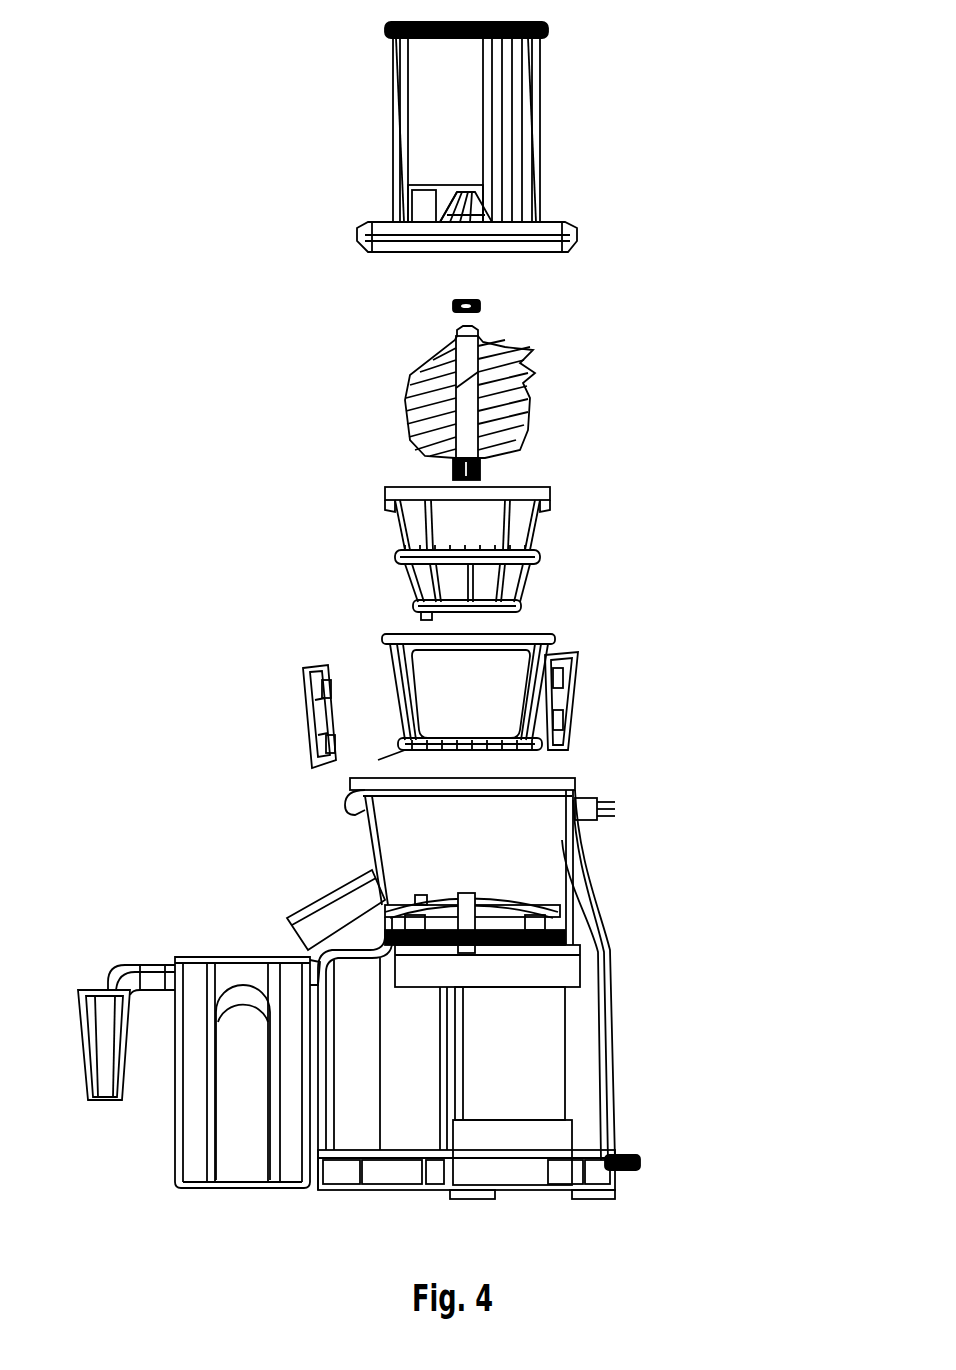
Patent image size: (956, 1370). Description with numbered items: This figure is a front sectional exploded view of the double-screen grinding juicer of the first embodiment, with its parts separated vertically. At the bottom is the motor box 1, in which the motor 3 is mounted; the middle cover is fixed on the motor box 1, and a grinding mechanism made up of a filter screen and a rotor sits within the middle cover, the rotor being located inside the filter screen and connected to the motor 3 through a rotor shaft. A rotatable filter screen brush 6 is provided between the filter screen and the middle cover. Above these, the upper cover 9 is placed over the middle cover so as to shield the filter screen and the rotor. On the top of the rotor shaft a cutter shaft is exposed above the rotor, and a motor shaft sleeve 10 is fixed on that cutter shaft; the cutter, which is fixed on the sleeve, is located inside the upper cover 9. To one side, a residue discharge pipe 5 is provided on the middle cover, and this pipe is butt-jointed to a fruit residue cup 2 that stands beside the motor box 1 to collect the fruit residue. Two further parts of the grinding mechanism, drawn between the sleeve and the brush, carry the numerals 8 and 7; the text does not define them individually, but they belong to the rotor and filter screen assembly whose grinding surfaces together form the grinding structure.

The motor box 1 is at (610, 1042).
The fruit residue cup 2 is at (230, 990).
The motor 3 is at (515, 1078).
The residue discharge pipe 5 is at (335, 897).
The filter screen brush 6 is at (545, 692).
The filter 7 is at (555, 552).
The pressing screw 8 is at (535, 400).
The upper cover 9 is at (478, 135).
The motor shaft sleeve 10 is at (482, 305).